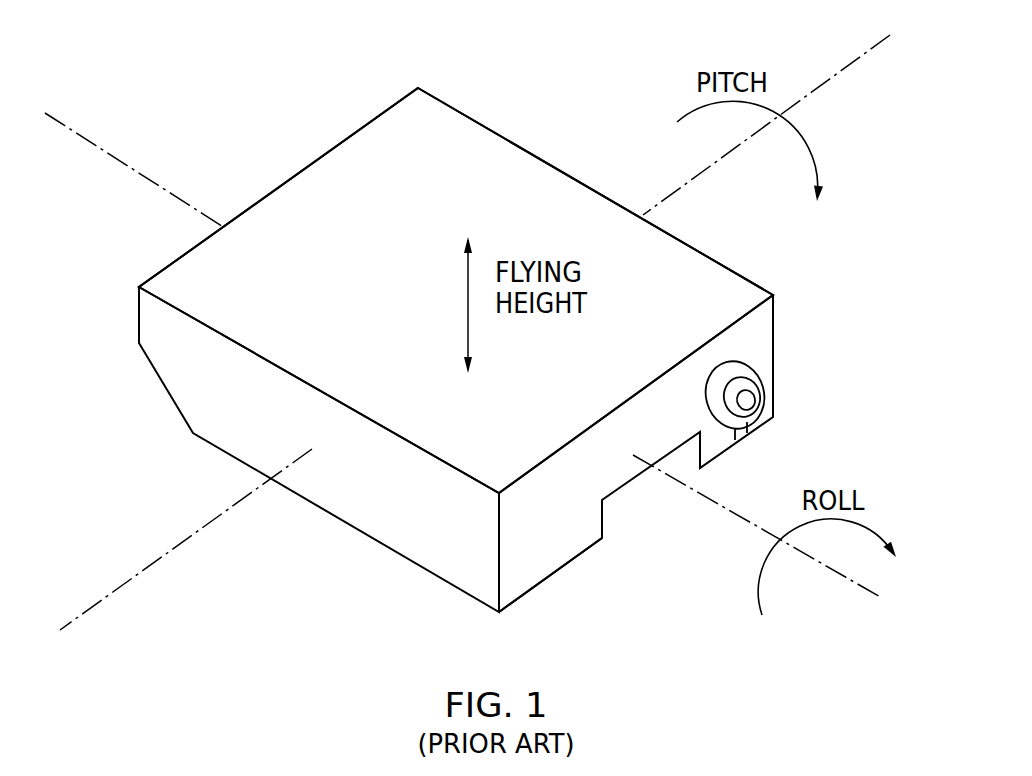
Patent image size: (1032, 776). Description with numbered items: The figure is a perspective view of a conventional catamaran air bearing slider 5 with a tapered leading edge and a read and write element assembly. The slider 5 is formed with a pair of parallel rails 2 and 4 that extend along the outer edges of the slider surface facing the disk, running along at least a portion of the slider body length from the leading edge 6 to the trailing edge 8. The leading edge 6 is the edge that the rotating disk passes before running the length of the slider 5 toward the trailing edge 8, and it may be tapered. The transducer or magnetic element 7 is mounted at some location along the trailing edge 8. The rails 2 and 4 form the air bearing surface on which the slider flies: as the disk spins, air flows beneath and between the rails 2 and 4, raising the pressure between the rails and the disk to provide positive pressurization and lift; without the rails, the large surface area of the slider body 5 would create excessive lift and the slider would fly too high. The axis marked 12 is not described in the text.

The rail 2 is at (724, 451).
The rail 4 is at (542, 584).
The catamaran slider 5 is at (503, 82).
The leading edge 6 is at (138, 312).
The transducer or magnetic element 7 is at (764, 378).
The trailing edge 8 is at (775, 312).
The longitudinal axis 12 is at (58, 118).